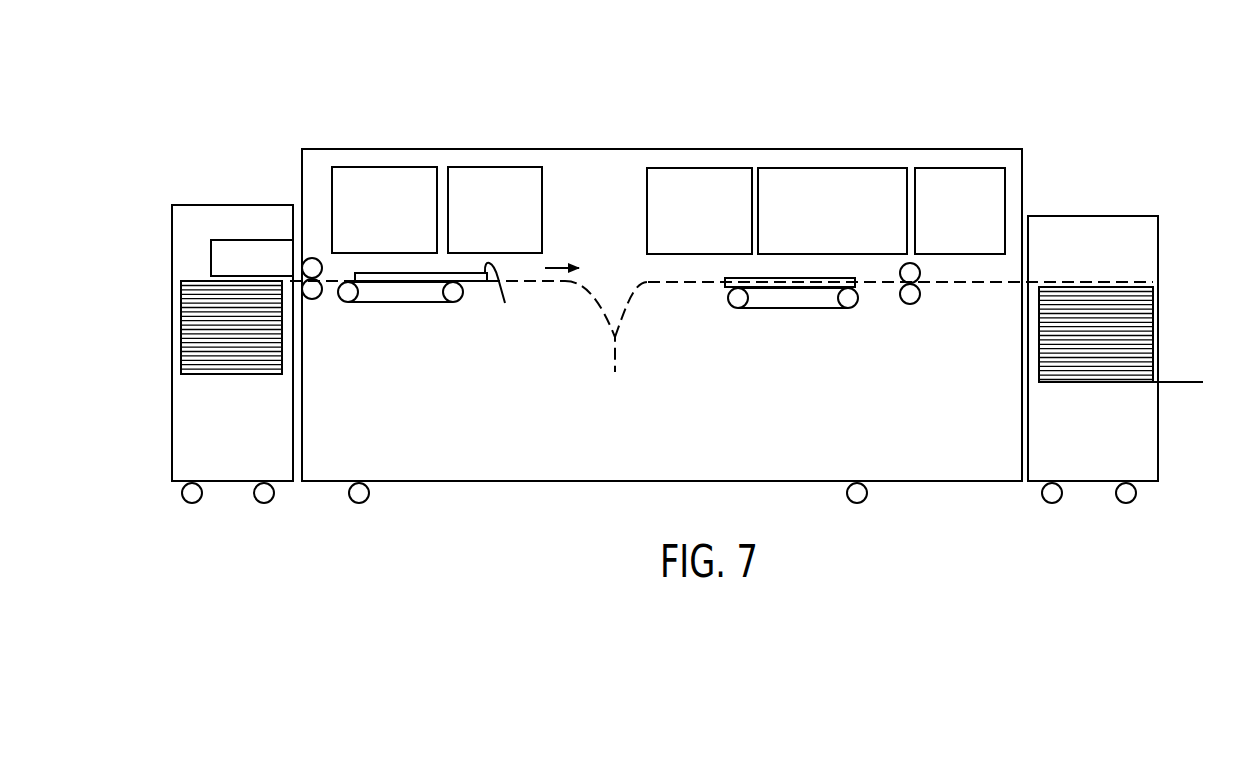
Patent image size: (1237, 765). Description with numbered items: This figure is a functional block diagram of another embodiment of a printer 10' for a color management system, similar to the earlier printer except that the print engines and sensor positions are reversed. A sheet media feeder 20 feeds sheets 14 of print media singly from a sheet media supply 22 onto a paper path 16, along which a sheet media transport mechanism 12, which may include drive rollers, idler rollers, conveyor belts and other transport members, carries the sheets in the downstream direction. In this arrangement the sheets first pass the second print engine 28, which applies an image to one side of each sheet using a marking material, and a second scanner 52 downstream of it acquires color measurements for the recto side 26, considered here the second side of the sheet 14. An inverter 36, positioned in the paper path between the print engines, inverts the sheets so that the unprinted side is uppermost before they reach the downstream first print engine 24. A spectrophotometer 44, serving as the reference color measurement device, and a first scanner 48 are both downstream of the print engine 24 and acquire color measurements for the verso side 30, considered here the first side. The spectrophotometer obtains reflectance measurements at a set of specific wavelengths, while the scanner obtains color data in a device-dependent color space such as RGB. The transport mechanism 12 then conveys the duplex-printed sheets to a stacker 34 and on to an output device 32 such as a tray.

The printer 10' is at (612, 271).
The sheet media transport mechanism 12 is at (313, 299).
The sheets 14 is at (394, 276).
The paper path 16 is at (550, 283).
The sheet media feeder 20 is at (236, 240).
The sheet media supply 22 is at (190, 232).
The first print engine 24 is at (700, 167).
The recto side 26 is at (499, 298).
The second print engine 28 is at (339, 166).
The verso side 30 is at (421, 283).
The output device 32 is at (1180, 378).
The stacker 34 is at (1088, 216).
The inverter 36 is at (586, 290).
The spectrophotometer 44 is at (864, 167).
The first scanner 48 is at (960, 167).
The second scanner 52 is at (486, 166).